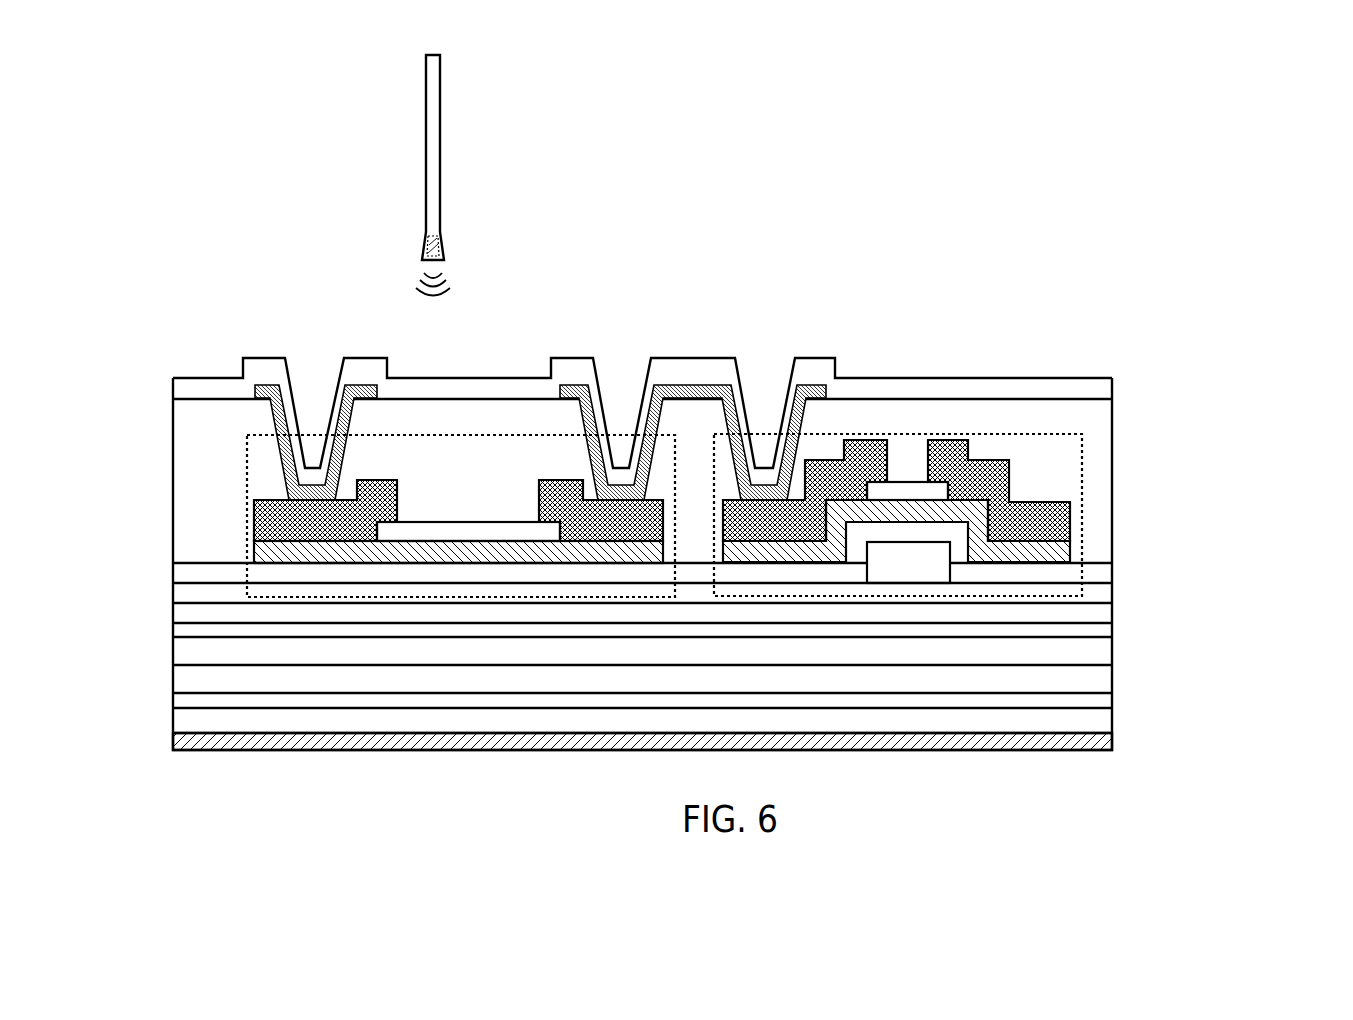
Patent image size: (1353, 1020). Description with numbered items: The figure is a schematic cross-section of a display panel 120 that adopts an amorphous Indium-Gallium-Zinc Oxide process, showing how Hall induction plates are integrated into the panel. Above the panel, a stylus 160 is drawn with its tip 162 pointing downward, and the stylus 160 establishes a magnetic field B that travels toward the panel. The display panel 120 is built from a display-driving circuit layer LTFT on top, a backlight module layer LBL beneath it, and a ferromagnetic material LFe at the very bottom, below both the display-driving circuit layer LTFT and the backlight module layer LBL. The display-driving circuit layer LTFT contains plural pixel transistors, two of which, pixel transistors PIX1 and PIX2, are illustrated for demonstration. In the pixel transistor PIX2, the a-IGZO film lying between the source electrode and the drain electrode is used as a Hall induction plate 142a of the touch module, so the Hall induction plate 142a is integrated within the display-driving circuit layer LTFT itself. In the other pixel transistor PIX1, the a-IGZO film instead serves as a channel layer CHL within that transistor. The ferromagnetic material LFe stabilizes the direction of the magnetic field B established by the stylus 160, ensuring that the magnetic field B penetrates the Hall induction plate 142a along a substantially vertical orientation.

The stylus 160 is at (426, 185).
The stylus tip 162 is at (426, 242).
The magnetic field B is at (433, 297).
The display panel 120 is at (1205, 345).
The pixel transistor PIX1 is at (967, 434).
The pixel transistor PIX2 is at (246, 492).
The Hall induction plate 142a is at (497, 557).
The channel layer CHL is at (902, 502).
The display-driving circuit layer LTFT is at (1123, 345).
The backlight module layer LBL is at (1123, 603).
The ferromagnetic material LFe is at (1112, 735).